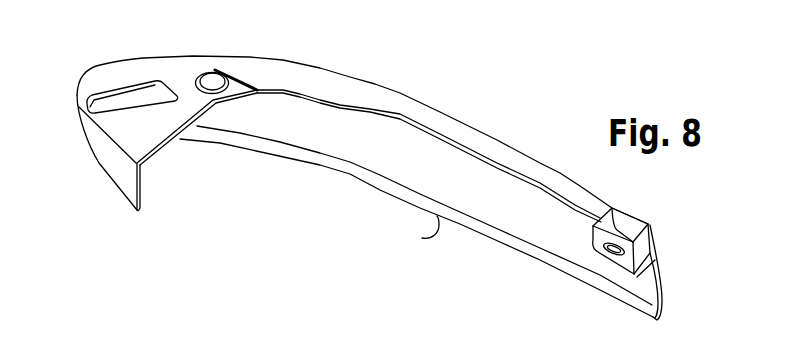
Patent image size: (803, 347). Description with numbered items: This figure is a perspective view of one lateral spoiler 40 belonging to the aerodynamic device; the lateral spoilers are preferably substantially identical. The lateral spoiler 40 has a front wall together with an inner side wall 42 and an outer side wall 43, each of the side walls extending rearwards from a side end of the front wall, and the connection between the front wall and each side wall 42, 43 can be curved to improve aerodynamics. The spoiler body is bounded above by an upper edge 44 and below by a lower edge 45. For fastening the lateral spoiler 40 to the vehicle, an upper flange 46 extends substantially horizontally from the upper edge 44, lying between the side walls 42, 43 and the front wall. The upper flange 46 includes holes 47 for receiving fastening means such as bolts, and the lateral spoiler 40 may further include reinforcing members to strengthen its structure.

The lateral spoiler 40 is at (456, 82).
The inner side wall 42 is at (123, 172).
The outer side wall 43 is at (523, 218).
The upper edge 44 is at (498, 140).
The lower edge 45 is at (422, 238).
The upper flange 46 is at (160, 70).
The holes 47 is at (210, 80).